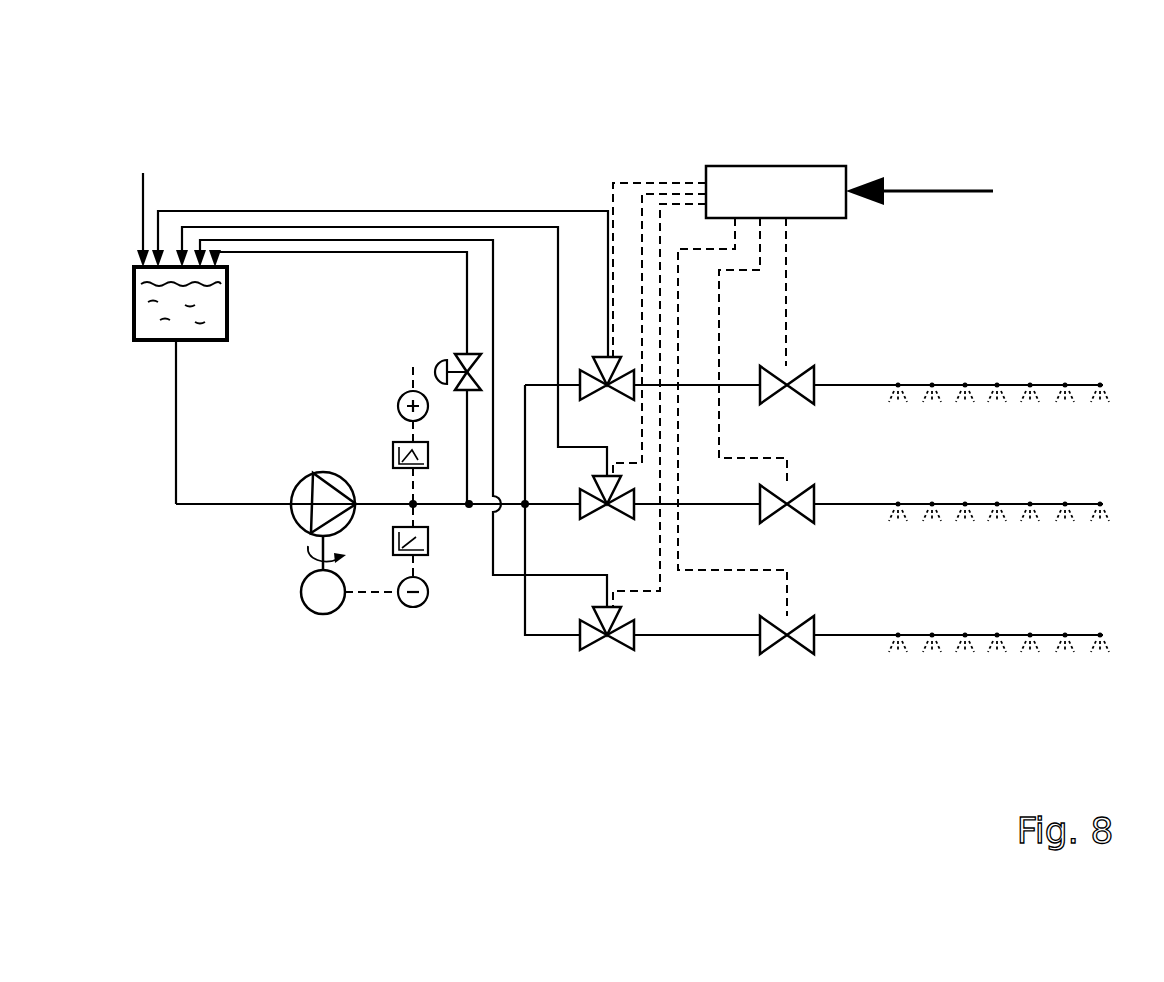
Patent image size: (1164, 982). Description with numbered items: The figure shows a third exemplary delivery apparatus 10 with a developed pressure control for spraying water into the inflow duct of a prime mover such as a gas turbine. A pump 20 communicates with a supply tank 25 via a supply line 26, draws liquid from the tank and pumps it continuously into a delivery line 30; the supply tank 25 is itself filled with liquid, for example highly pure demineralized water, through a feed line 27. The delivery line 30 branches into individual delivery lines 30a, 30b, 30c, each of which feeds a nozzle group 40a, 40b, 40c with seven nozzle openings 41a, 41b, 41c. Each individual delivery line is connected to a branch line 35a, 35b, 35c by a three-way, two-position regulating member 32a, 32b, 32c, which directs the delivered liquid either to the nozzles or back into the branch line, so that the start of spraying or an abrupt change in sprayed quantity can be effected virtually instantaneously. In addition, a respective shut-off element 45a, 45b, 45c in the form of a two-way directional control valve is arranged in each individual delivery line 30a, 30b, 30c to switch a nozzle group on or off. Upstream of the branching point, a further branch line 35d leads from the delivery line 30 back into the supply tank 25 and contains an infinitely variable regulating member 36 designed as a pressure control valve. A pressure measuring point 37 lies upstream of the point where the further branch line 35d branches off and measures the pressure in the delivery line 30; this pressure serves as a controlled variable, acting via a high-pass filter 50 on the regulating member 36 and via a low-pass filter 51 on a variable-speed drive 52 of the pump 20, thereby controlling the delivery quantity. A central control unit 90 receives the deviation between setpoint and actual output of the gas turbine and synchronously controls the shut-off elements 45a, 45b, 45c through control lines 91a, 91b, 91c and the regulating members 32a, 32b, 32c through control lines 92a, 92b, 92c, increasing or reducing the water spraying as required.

The apparatus 10 is at (216, 98).
The pump 20 is at (301, 484).
The supply tank 25 is at (228, 296).
The supply line 26 is at (177, 380).
The feed line 27 is at (142, 198).
The delivery line 30 is at (467, 502).
The individual delivery line 30a is at (540, 637).
The individual delivery line 30b is at (548, 506).
The individual delivery line 30c is at (540, 384).
The 3/2-way regulating member 32a is at (603, 651).
The 3/2-way regulating member 32b is at (603, 520).
The 3/2-way regulating member 32c is at (603, 401).
The branch line 35a is at (352, 211).
The branch line 35b is at (447, 227).
The branch line 35c is at (532, 240).
The further branch line 35d is at (465, 291).
The infinitely variable regulating member 36 is at (463, 354).
The pressure measuring point 37 is at (410, 502).
The nozzle group 40a is at (828, 636).
The nozzle group 40b is at (828, 505).
The nozzle group 40c is at (832, 386).
The nozzle openings 41a is at (990, 689).
The nozzle openings 41b is at (991, 558).
The nozzle openings 41c is at (990, 434).
The shut-off element 45a is at (779, 655).
The shut-off element 45b is at (779, 524).
The shut-off element 45c is at (779, 405).
The high-pass filter 50 is at (391, 445).
The low-pass filter 51 is at (429, 554).
The variable-speed drive 52 is at (323, 615).
The central control unit 90 is at (776, 166).
The control line 91a is at (681, 462).
The control line 91b is at (721, 297).
The control line 91c is at (788, 290).
The control line 92a is at (694, 204).
The control line 92b is at (655, 194).
The control line 92c is at (617, 183).